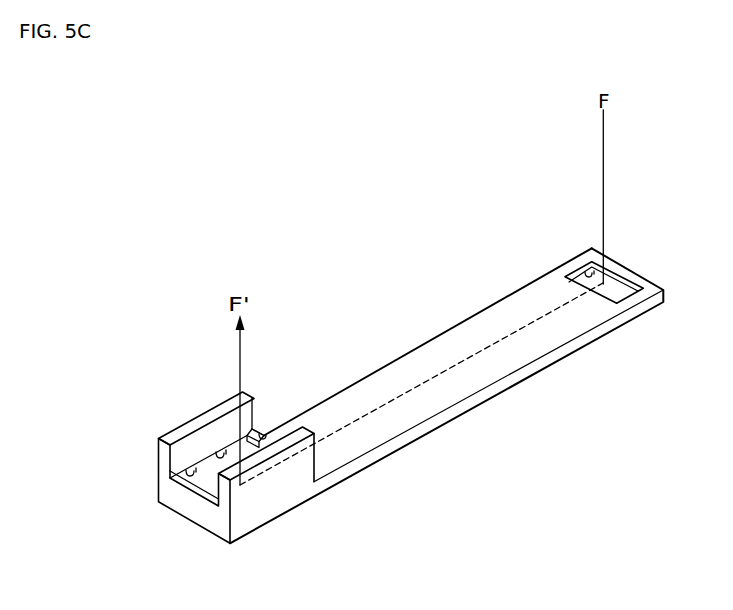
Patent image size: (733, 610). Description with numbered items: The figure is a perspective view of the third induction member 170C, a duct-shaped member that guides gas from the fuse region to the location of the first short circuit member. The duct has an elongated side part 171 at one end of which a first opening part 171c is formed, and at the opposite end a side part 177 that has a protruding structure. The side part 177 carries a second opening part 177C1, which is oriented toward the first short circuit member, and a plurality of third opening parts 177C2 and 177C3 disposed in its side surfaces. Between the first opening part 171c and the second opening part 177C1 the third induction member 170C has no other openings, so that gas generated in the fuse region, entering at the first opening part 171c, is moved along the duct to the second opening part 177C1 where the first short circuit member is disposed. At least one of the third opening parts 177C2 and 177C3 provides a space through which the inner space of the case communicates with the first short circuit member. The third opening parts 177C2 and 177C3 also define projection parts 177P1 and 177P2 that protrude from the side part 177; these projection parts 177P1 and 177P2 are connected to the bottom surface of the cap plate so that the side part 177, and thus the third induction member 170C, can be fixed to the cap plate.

The third induction member 170C is at (389, 287).
The side part 171 is at (638, 308).
The first opening part 171c is at (586, 274).
The side part 177 is at (275, 498).
The projection part 177P1 is at (287, 445).
The projection part 177P2 is at (176, 433).
The second opening part 177C1 is at (219, 450).
The third opening part 177C2 is at (263, 430).
The third opening part 177C3 is at (184, 472).